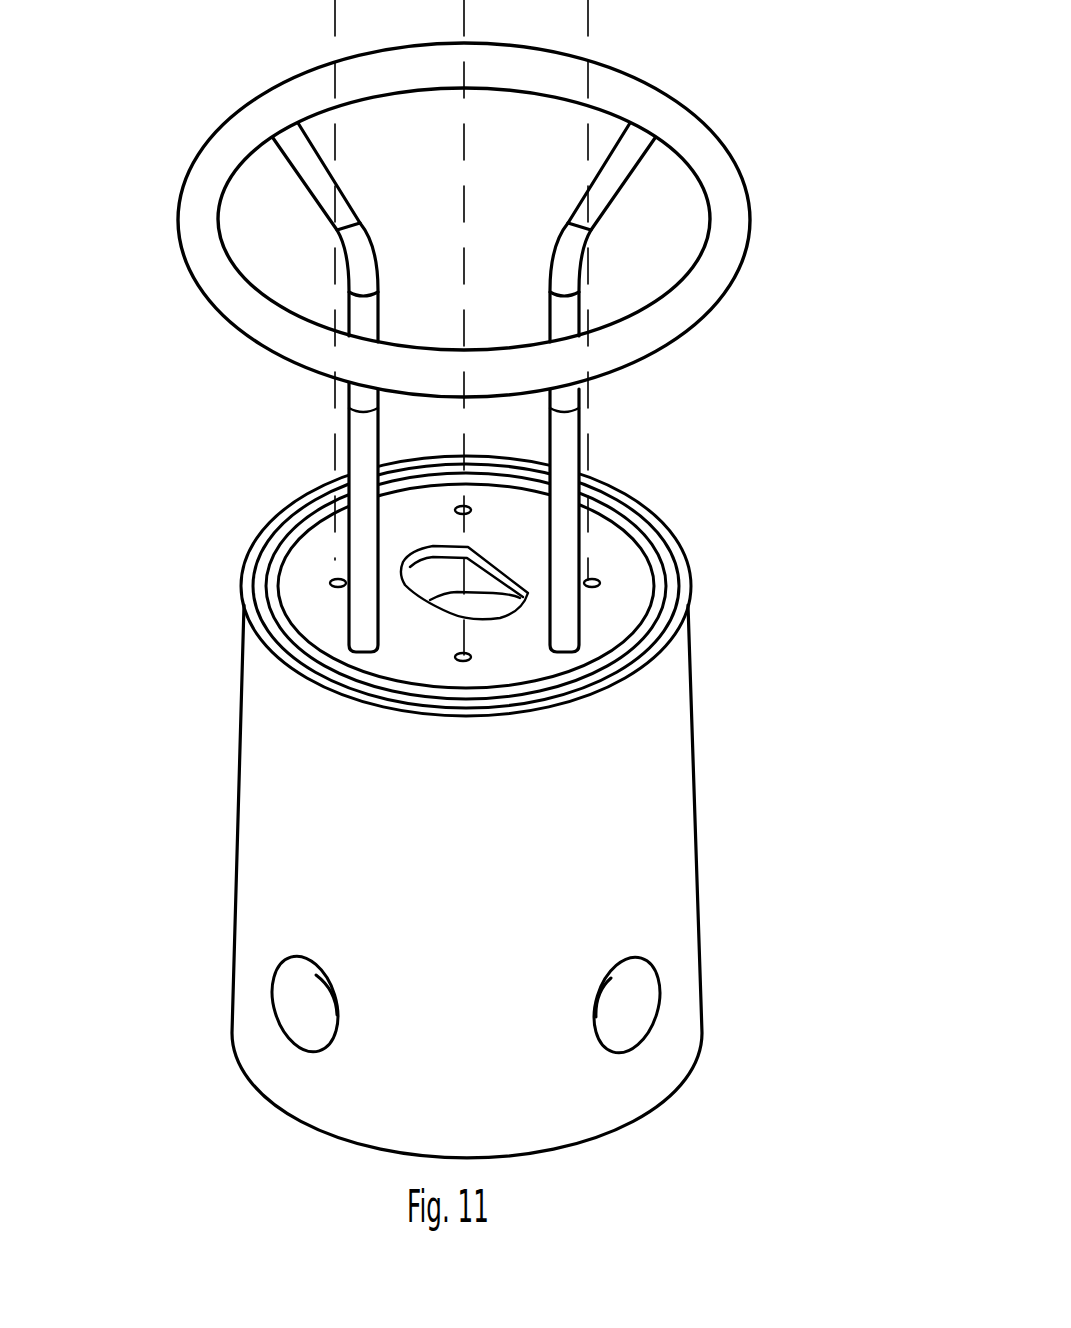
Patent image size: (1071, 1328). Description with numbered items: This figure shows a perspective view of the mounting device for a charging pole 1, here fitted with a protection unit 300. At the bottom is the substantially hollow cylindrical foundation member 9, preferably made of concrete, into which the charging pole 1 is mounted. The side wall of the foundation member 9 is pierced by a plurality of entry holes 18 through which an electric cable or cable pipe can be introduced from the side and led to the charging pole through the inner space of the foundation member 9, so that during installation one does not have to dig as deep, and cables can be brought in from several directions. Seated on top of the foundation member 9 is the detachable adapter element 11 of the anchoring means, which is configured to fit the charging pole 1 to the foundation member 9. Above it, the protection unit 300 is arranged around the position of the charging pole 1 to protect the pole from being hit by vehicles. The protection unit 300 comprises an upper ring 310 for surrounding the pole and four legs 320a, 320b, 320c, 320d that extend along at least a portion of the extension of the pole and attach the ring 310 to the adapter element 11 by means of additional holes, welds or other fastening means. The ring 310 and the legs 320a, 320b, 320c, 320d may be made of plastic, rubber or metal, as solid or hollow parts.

The charging pole 1 is at (587, 17).
The foundation member 9 is at (518, 881).
The adapter element 11 is at (507, 586).
The entry holes 18 is at (533, 1003).
The protection unit 300 is at (459, 347).
The upper ring 310 is at (515, 220).
The leg 320a is at (648, 517).
The leg 320b is at (693, 220).
The leg 320c is at (222, 232).
The leg 320d is at (280, 517).